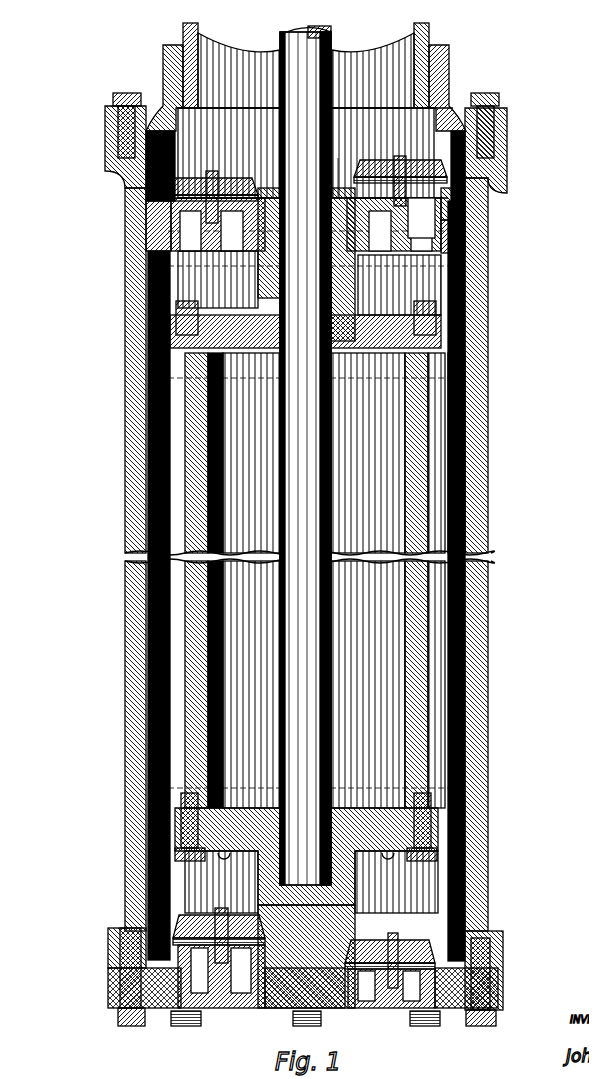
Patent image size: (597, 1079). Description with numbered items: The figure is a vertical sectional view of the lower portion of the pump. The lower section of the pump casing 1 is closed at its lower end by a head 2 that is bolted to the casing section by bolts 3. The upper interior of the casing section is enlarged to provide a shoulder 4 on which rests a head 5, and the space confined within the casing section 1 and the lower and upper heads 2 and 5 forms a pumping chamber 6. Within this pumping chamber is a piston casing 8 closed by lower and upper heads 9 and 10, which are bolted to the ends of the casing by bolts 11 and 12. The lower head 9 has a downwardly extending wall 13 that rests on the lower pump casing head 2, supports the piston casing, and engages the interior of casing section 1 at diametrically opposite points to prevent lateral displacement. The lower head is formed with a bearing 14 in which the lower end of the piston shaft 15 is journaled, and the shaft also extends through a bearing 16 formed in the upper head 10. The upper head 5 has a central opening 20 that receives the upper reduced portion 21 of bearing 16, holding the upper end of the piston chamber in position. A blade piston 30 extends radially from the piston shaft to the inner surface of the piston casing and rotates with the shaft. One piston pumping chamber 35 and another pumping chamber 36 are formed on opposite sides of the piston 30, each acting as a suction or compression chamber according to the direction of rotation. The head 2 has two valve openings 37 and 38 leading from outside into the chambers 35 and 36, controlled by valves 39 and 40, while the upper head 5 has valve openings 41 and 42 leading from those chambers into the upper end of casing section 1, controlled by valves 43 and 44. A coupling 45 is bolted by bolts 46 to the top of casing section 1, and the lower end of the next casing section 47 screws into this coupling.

The lower section of the pump casing 1 is at (482, 600).
The head 2 is at (497, 978).
The bolts 3 is at (110, 1014).
The shoulder 4 is at (160, 243).
The head 5 is at (445, 231).
The pumping chamber 6 is at (450, 470).
The piston casing 8 is at (420, 497).
The lower head 9 is at (425, 826).
The upper head 10 is at (437, 323).
The bolts 11 is at (205, 885).
The bolts 12 is at (190, 325).
The downwardly extending wall 13 is at (300, 935).
The bearing 14 is at (445, 878).
The piston shaft 15 is at (290, 427).
The bearing 16 is at (420, 268).
The central opening 20 is at (430, 250).
The upper reduced portion 21 is at (333, 195).
The blade piston 30 is at (360, 670).
The piston pumping chamber 35 is at (455, 905).
The pumping chamber 36 is at (160, 896).
The valve opening 37 is at (400, 990).
The valve opening 38 is at (228, 990).
The valve 39 is at (495, 935).
The valve 40 is at (170, 958).
The valve opening 41 is at (435, 203).
The valve opening 42 is at (190, 224).
The valve 43 is at (440, 162).
The valve 44 is at (230, 178).
The coupling 45 is at (155, 62).
The bolts 46 is at (105, 92).
The next section of the pump casing 47 is at (423, 27).